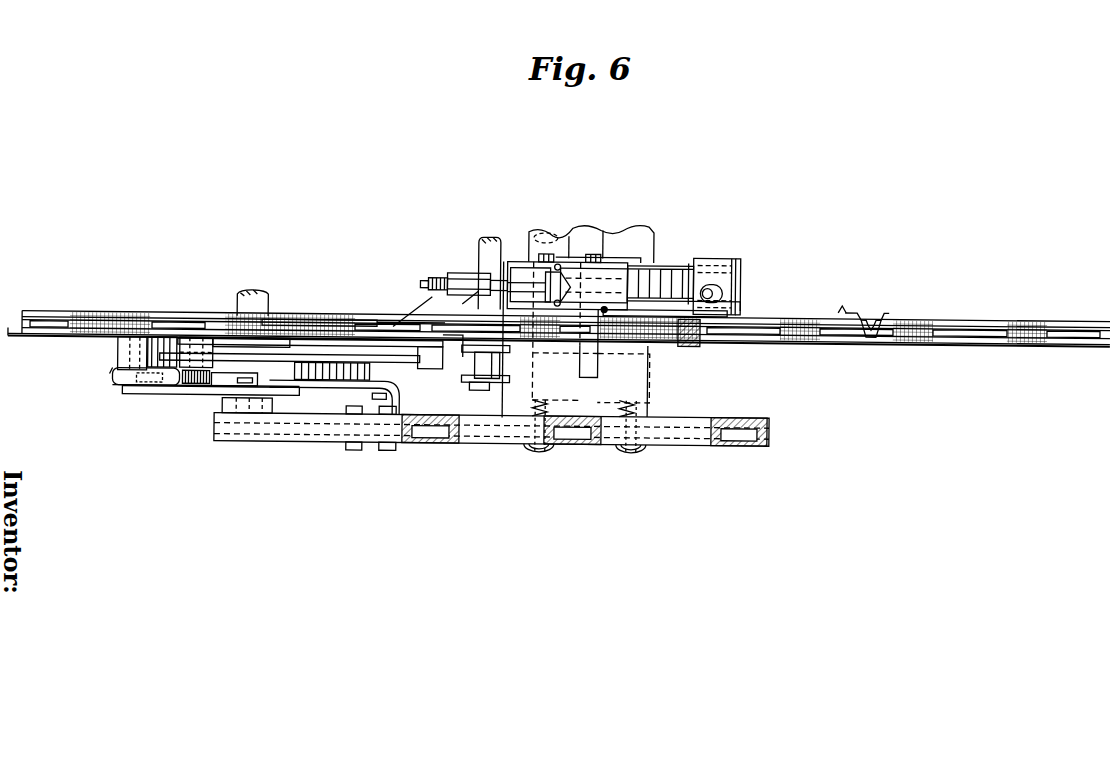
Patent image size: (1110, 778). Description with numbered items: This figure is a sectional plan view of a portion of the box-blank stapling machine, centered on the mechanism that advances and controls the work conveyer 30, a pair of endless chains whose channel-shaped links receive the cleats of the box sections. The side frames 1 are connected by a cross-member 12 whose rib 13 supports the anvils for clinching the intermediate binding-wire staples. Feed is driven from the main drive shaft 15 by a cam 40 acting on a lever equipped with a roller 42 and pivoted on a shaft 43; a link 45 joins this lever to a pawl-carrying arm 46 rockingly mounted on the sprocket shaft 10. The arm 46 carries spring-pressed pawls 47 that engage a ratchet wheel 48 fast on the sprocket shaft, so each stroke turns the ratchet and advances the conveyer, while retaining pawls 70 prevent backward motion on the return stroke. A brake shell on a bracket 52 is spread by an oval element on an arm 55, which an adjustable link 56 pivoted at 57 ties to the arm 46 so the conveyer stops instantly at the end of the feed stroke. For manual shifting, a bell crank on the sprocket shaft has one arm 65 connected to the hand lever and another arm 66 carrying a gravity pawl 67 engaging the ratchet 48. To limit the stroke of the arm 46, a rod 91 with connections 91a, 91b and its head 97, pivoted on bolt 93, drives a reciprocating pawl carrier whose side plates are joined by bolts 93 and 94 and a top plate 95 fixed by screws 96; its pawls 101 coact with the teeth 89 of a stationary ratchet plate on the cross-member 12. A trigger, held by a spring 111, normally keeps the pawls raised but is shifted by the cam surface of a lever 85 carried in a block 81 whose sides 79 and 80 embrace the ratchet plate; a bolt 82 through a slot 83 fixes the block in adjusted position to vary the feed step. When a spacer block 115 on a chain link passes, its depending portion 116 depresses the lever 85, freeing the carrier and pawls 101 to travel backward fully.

The side frame 1 is at (693, 430).
The sprocket shaft 10 is at (245, 298).
The cross-member 12 is at (645, 235).
The rib 13 is at (590, 233).
The main drive shaft 15 is at (545, 233).
The work conveyer 30 is at (1023, 322).
The cam 40 is at (527, 390).
The roller 42 is at (502, 383).
The shaft 43 is at (480, 253).
The link 45 is at (427, 364).
The pawl-carrying arm 46 is at (248, 340).
The spring-pressed pawls 47 is at (200, 356).
The ratchet wheel 48 is at (355, 381).
The bracket 52 is at (345, 395).
The arm 55 is at (148, 385).
The adjustable link 56 is at (120, 387).
The pivot 57 is at (250, 384).
The bell crank lever arm 65 is at (335, 396).
The bell crank lever arm 66 is at (158, 389).
The gravity pawl 67 is at (125, 353).
The retaining pawls 70 is at (390, 375).
The block side 79 is at (727, 315).
The block side 80 is at (703, 258).
The block 81 is at (713, 271).
The bolt 82 is at (733, 265).
The slot 83 is at (730, 285).
The lever 85 is at (678, 314).
The teeth 89 is at (672, 260).
The rod 91 is at (377, 332).
The connection 91a is at (445, 291).
The connection 91b is at (432, 281).
The bolt 93 is at (548, 270).
The bolt 94 is at (606, 250).
The top plate 95 is at (600, 283).
The screws 96 is at (604, 309).
The head 97 is at (530, 284).
The pawls 101 is at (634, 297).
The spring 111 is at (573, 268).
The spacer block 115 is at (870, 316).
The depending portion 116 is at (842, 310).